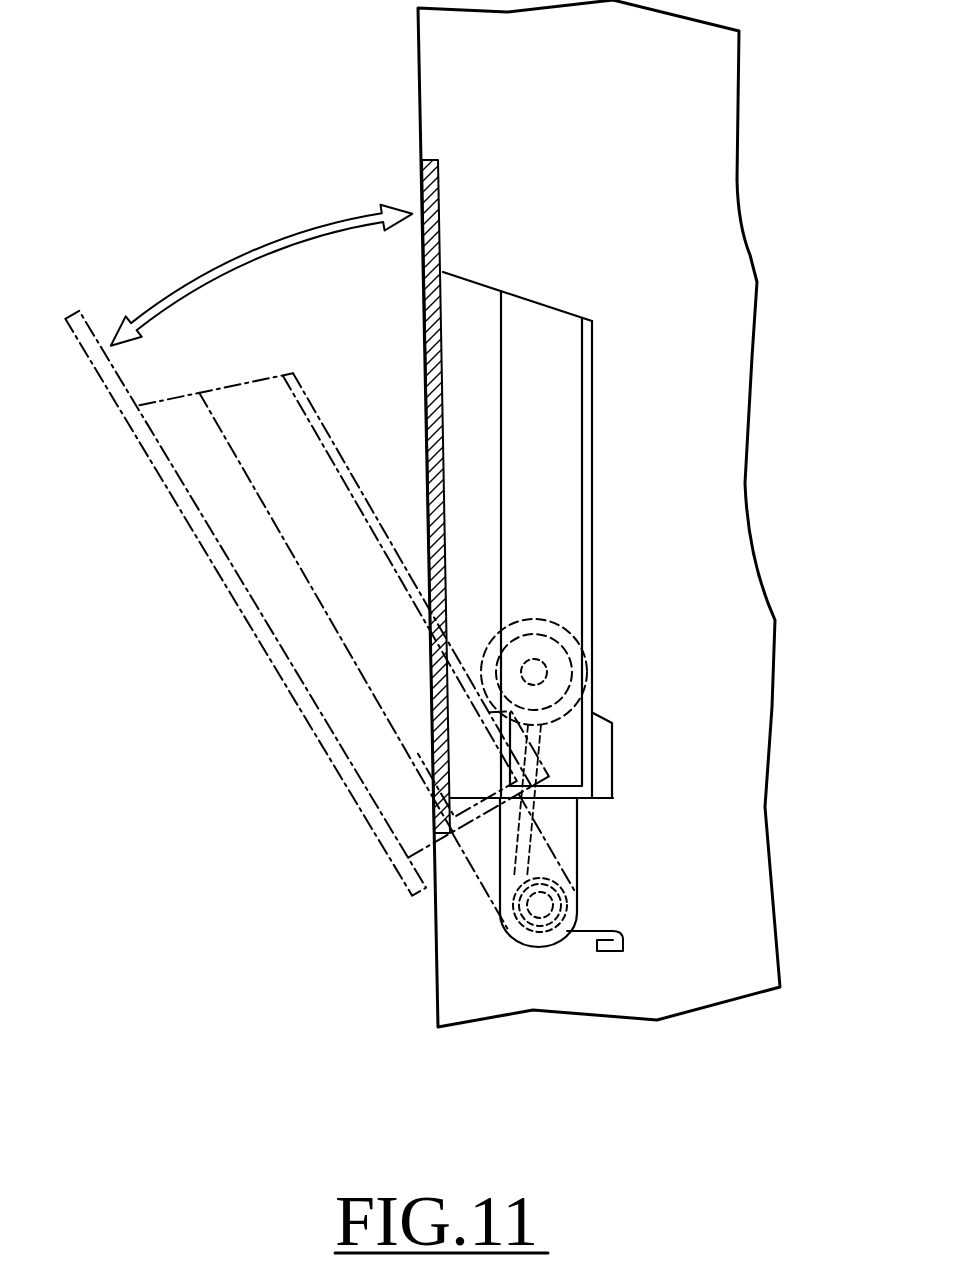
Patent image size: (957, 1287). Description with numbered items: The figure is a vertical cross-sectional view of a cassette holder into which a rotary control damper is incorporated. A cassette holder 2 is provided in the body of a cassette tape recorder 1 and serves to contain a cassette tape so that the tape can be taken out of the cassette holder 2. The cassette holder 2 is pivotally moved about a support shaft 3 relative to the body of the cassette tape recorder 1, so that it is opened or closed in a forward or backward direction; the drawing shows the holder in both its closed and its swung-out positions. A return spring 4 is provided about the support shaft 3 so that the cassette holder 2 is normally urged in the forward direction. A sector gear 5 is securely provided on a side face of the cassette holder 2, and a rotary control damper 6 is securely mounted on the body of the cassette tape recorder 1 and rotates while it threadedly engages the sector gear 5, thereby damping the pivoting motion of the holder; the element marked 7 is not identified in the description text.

The cassette tape recorder 1 is at (410, 54).
The cassette holder 2 is at (423, 190).
The support shaft 3 is at (540, 905).
The return spring 4 is at (500, 800).
The sector gear 5 is at (613, 760).
The rotary control damper 6 is at (563, 627).
The shaft 7 is at (573, 668).